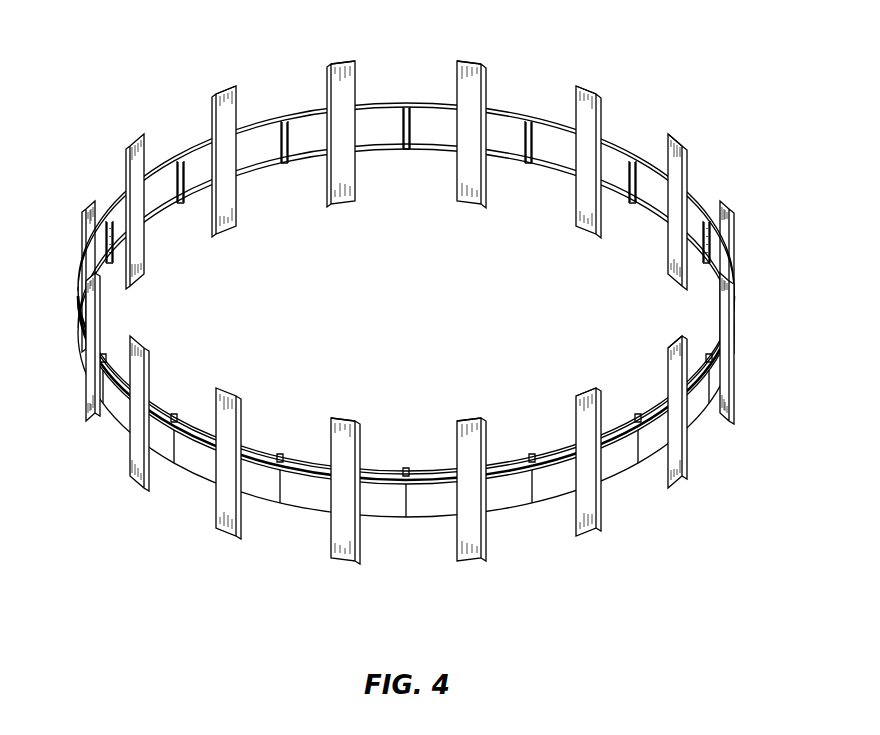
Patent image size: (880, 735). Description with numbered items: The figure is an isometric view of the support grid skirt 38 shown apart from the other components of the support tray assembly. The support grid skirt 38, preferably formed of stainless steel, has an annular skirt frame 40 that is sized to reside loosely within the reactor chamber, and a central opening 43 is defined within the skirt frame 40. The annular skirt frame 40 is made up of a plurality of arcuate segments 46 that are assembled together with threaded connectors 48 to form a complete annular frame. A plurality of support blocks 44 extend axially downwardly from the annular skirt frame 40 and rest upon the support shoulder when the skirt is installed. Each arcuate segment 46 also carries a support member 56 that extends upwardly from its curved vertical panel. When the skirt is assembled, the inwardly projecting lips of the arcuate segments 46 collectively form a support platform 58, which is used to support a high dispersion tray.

The support grid skirt 38 is at (406, 275).
The annular skirt frame 40 is at (281, 104).
The central opening 43 is at (415, 307).
The support blocks 44 is at (228, 222).
The arcuate segments 46 is at (302, 108).
The threaded connectors 48 is at (105, 233).
The support member 56 is at (223, 90).
The support platform 58 is at (432, 151).